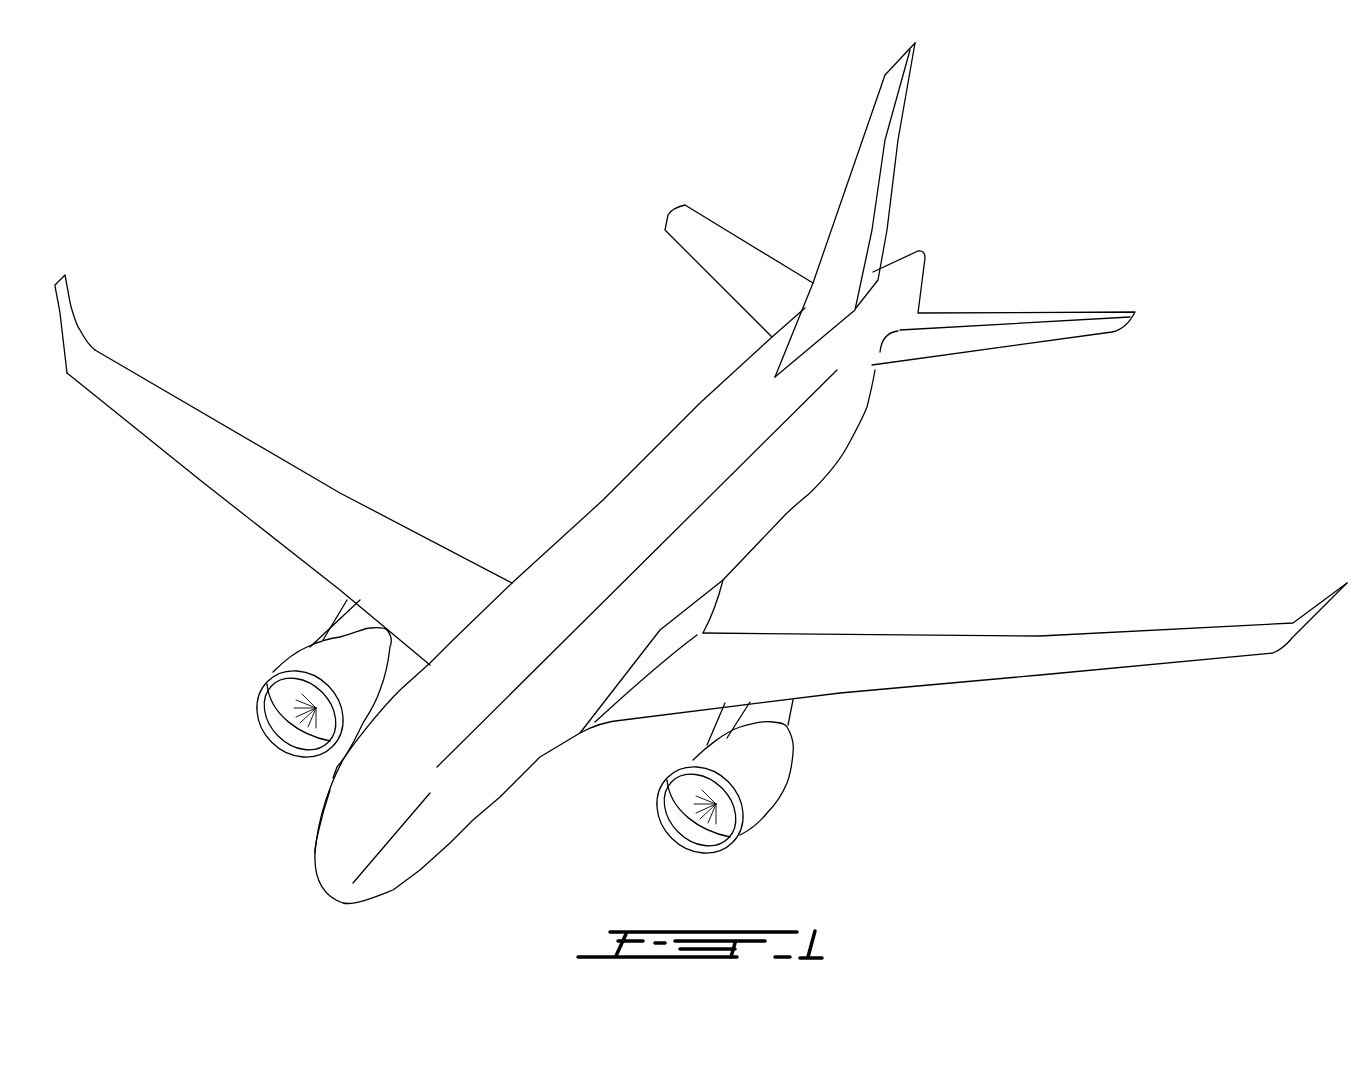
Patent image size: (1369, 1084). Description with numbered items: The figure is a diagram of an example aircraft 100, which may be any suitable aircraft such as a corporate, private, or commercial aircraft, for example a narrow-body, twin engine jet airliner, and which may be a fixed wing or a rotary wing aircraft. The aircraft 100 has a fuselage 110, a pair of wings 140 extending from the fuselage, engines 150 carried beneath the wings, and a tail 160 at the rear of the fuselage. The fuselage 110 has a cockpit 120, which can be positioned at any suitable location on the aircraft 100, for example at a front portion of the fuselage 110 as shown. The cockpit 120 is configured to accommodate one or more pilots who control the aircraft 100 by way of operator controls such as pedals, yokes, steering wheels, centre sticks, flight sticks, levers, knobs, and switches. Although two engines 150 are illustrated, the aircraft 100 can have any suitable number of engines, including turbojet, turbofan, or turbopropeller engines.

The aircraft 100 is at (173, 233).
The fuselage 110 is at (780, 497).
The cockpit 120 is at (320, 898).
The wings 140 is at (350, 535).
The engines 150 is at (307, 665).
The tail 160 is at (880, 200).